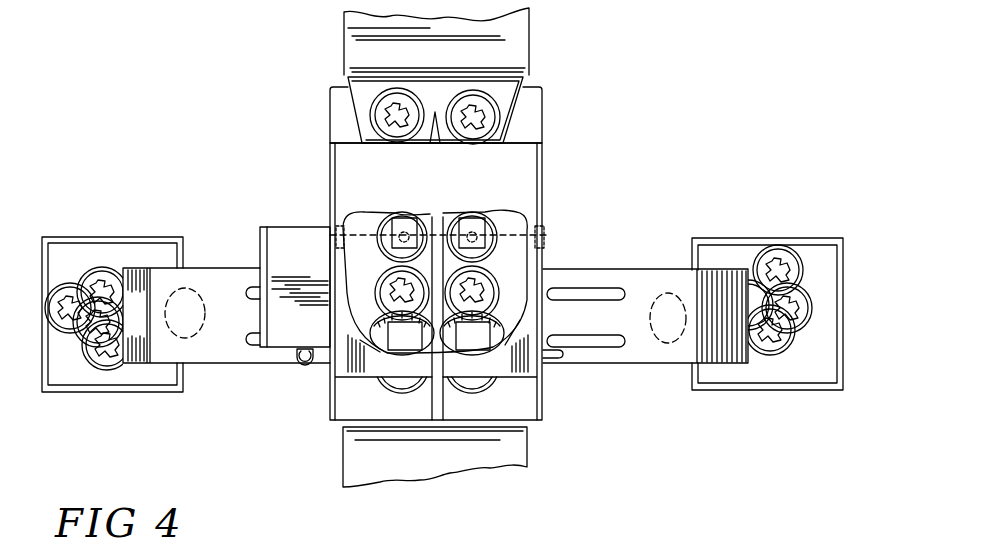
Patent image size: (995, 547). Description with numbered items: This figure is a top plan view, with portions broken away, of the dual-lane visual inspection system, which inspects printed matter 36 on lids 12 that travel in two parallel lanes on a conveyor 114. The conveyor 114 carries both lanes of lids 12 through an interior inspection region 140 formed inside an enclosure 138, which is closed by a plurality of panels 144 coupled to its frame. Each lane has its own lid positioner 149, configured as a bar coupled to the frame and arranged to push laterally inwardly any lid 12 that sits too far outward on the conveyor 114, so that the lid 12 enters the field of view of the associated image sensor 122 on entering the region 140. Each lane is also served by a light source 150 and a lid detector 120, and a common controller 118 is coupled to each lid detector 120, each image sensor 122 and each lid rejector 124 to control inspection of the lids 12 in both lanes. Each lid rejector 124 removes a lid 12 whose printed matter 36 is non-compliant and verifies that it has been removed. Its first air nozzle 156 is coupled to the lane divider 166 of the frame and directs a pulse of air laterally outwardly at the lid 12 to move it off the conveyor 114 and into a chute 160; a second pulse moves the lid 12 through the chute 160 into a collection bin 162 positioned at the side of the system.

The lid 12 is at (200, 290).
The printed matter 36 is at (490, 118).
The conveyor 114 is at (512, 53).
The common controller 118 is at (272, 233).
The lid detector 120 is at (340, 212).
The image sensor 122 is at (398, 238).
The lid rejector 124 is at (277, 389).
The enclosure 138 is at (330, 160).
The interior inspection region 140 is at (360, 300).
The panel 144 is at (330, 400).
The lid positioner 149 is at (355, 103).
The light source 150 is at (381, 341).
The first air nozzle 156 is at (442, 290).
The chute 160 is at (218, 350).
The collection bin 162 is at (128, 392).
The lane divider 166 is at (447, 190).